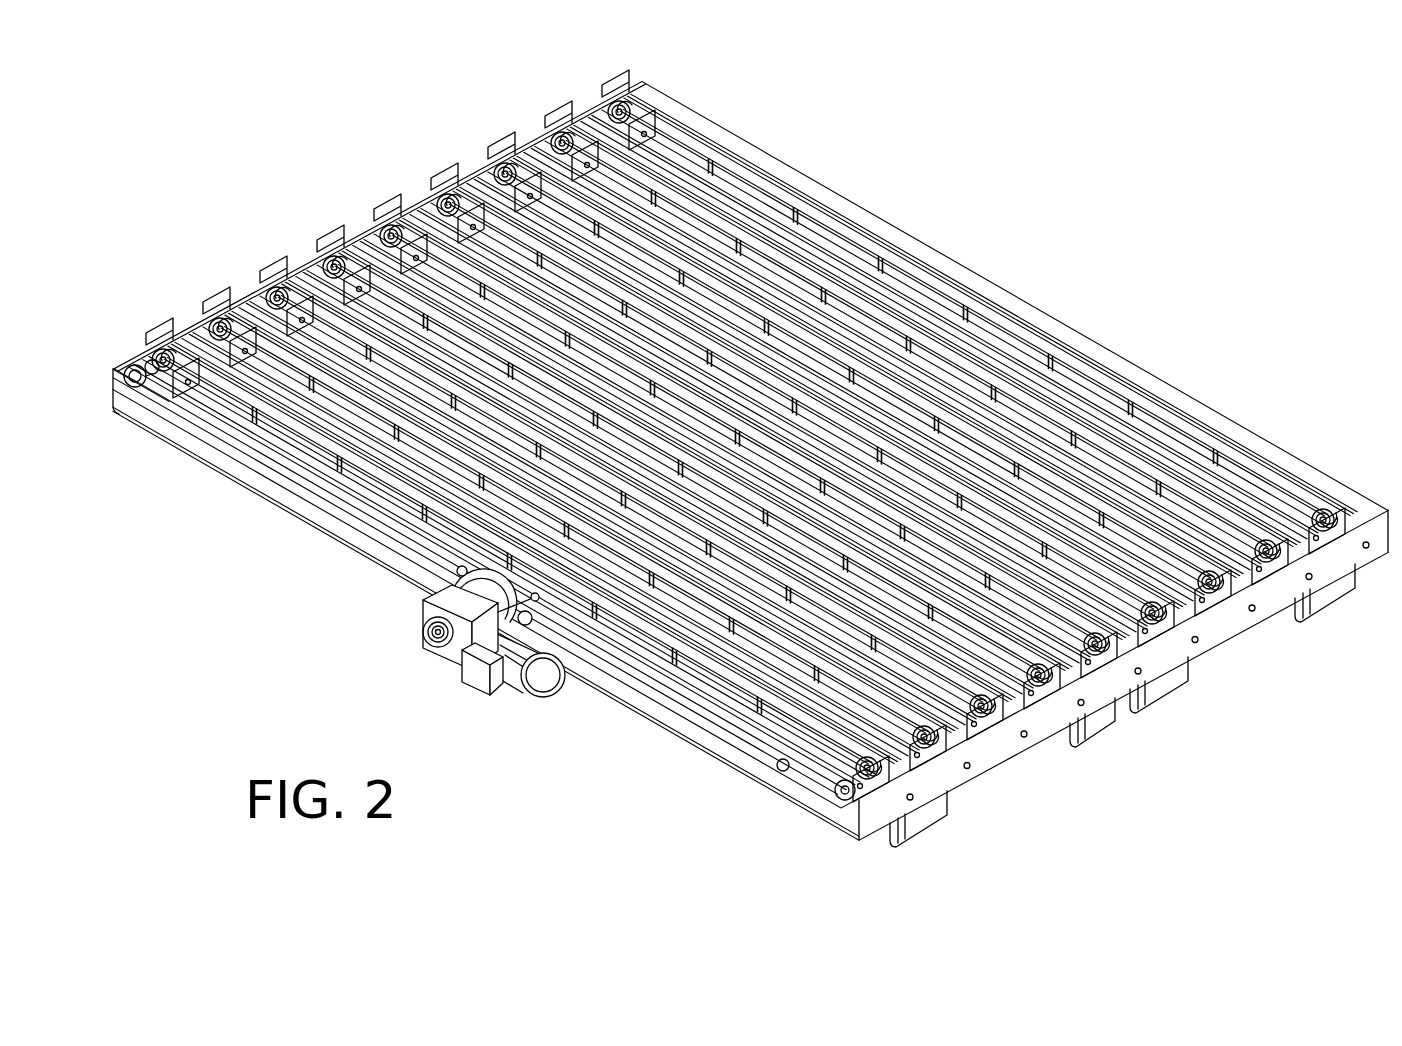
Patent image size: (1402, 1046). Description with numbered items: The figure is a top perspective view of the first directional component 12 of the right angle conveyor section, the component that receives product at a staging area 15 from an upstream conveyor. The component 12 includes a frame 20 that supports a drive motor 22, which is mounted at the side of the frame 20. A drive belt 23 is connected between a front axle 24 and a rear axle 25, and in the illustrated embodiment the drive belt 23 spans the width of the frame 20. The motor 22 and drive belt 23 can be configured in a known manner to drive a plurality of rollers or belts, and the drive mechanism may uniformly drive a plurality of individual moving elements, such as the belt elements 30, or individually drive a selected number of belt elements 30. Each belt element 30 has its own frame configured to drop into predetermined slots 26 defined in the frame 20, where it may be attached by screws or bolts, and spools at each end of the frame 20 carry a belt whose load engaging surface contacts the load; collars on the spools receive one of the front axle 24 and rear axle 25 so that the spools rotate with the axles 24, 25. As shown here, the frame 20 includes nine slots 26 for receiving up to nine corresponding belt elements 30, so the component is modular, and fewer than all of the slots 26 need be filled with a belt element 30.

The first directional component 12 is at (637, 66).
The staging area 15 is at (940, 428).
The frame 20 is at (135, 365).
The drive motor 22 is at (437, 634).
The drive belt 23 is at (268, 456).
The front axle 24 is at (268, 296).
The rear axle 25 is at (980, 720).
The slots 26 is at (563, 112).
The belt elements 30 is at (817, 322).